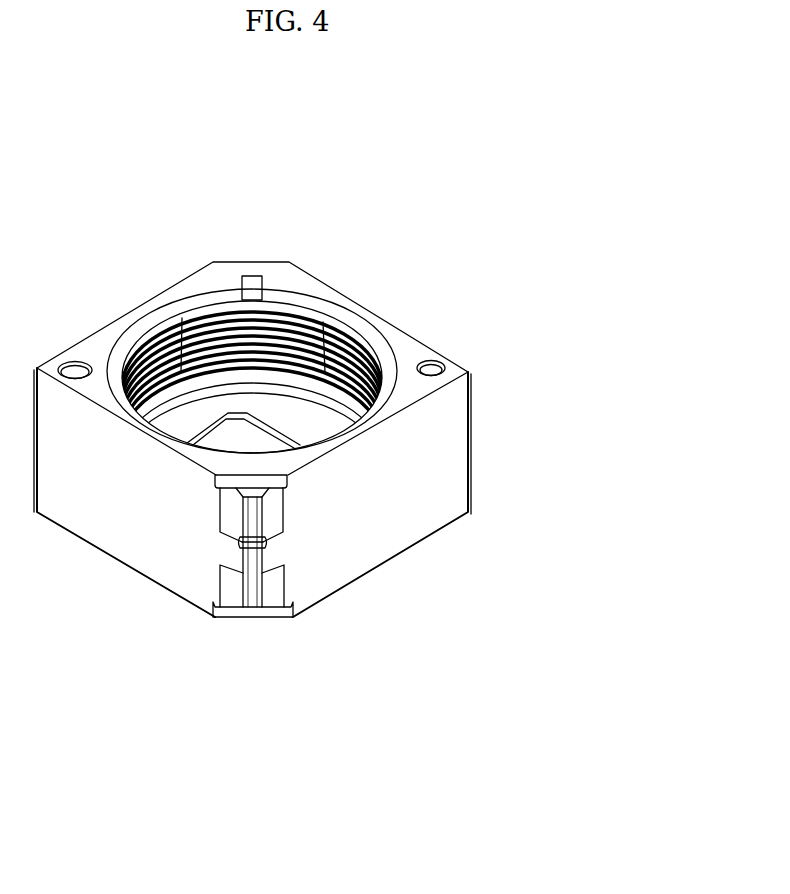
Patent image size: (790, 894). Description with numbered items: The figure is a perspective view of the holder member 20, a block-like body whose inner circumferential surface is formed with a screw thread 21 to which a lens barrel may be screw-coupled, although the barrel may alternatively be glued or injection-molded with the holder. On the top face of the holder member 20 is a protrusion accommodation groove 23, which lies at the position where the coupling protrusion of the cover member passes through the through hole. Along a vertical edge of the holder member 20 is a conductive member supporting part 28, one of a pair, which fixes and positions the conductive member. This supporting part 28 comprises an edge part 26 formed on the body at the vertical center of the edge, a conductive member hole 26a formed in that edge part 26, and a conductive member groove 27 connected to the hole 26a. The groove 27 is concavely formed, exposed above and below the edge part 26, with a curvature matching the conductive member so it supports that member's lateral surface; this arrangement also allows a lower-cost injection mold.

The holder member 20 is at (100, 195).
The screw thread 21 is at (295, 328).
The protrusion accommodation groove 23 is at (430, 367).
The edge part 26 is at (250, 567).
The conductive member hole 26a is at (255, 544).
The conductive member groove 27 is at (255, 597).
The conductive member supporting part 28 is at (388, 627).